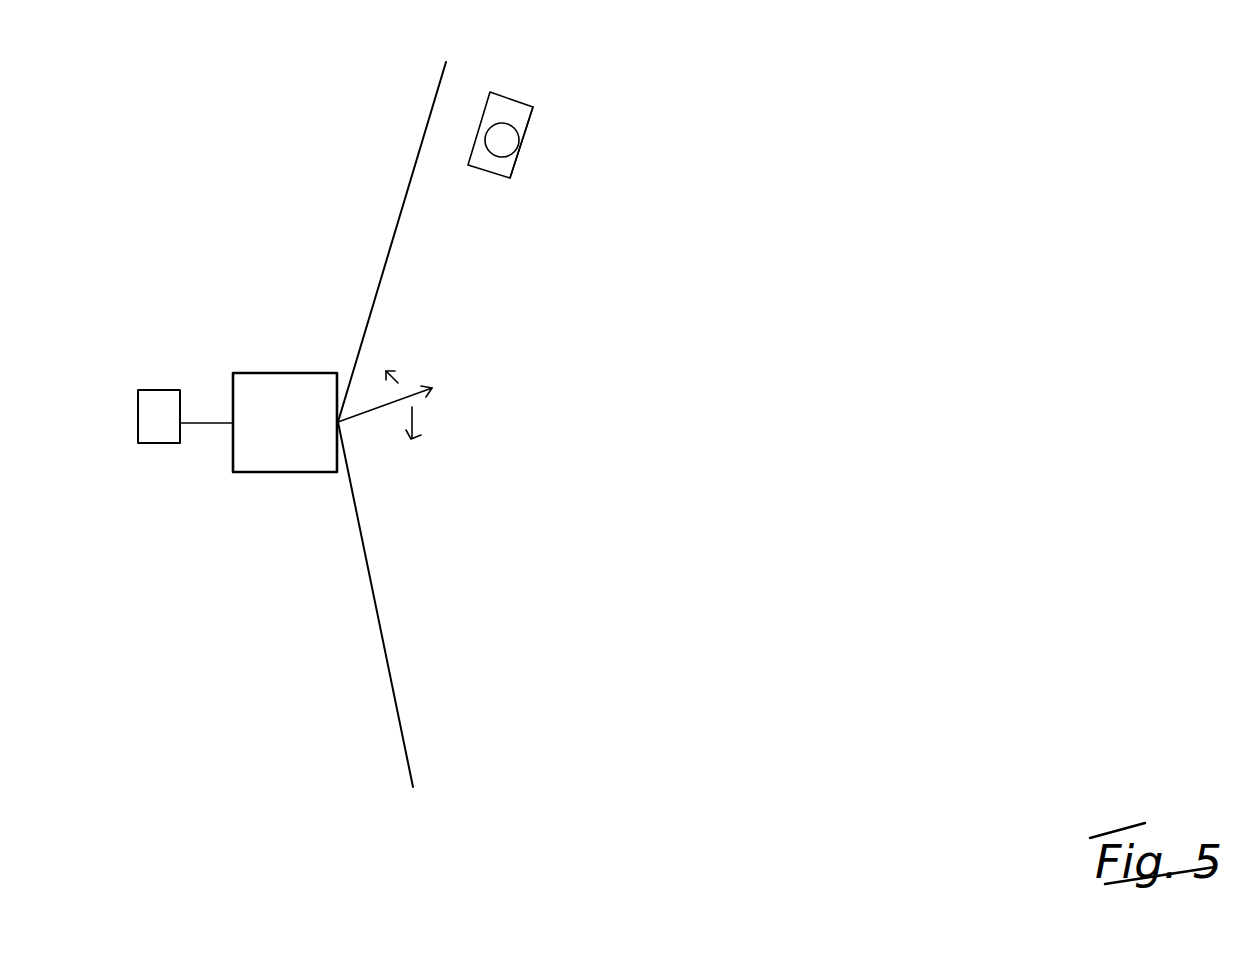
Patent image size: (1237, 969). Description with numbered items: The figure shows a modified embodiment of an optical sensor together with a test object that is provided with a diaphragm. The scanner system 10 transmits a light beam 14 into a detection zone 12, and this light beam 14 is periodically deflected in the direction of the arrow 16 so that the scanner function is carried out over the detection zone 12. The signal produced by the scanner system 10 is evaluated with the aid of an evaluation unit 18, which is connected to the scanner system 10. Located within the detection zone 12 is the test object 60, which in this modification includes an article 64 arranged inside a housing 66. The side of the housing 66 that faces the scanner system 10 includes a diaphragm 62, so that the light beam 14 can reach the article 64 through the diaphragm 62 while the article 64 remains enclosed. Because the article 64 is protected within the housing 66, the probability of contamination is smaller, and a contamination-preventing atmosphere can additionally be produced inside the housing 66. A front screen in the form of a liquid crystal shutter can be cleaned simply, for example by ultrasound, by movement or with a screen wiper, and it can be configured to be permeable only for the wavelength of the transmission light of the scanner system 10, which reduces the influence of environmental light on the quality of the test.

The scanner system 10 is at (288, 395).
The detection zone 12 is at (414, 548).
The light beam 14 is at (385, 407).
The arrow 16 is at (415, 420).
The evaluation unit 18 is at (157, 423).
The test object 60 is at (575, 139).
The diaphragm 62 is at (495, 177).
The article 64 is at (507, 122).
The housing 66 is at (517, 162).